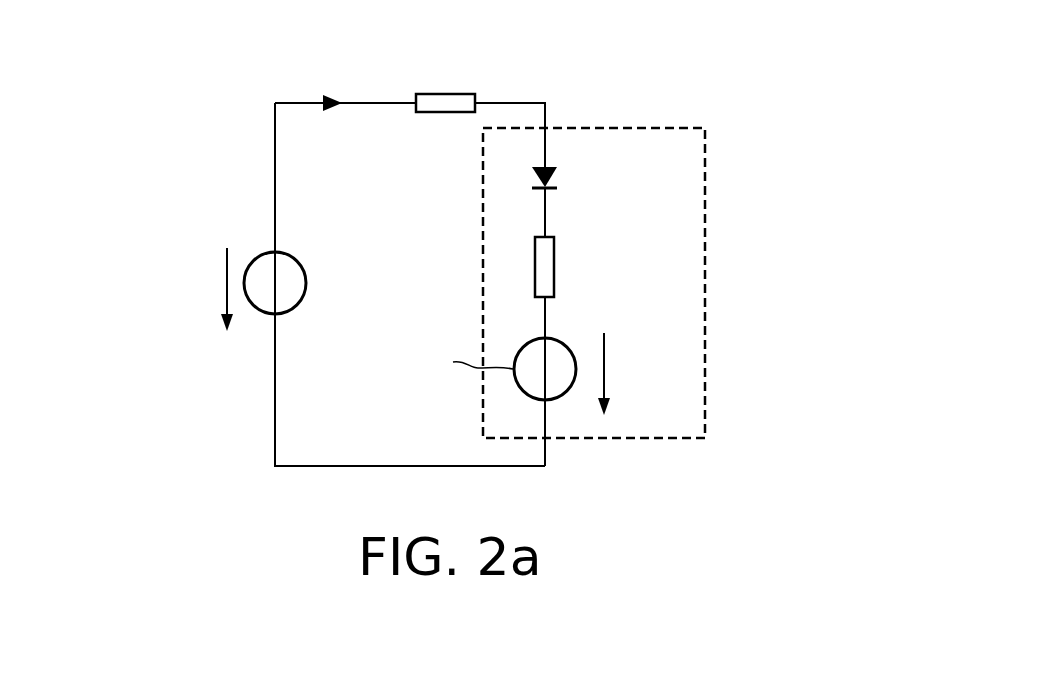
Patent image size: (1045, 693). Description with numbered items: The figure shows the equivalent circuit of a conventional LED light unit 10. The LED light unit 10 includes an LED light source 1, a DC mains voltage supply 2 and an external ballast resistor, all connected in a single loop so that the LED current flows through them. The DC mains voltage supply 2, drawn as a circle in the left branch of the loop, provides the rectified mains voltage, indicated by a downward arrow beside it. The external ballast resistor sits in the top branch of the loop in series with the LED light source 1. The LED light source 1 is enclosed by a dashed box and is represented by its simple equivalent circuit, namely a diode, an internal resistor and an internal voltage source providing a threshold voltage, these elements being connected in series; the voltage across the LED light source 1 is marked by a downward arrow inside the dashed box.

The LED light unit 10 is at (690, 67).
The DC mains voltage supply 2 is at (298, 257).
The LED light source 1 is at (707, 272).